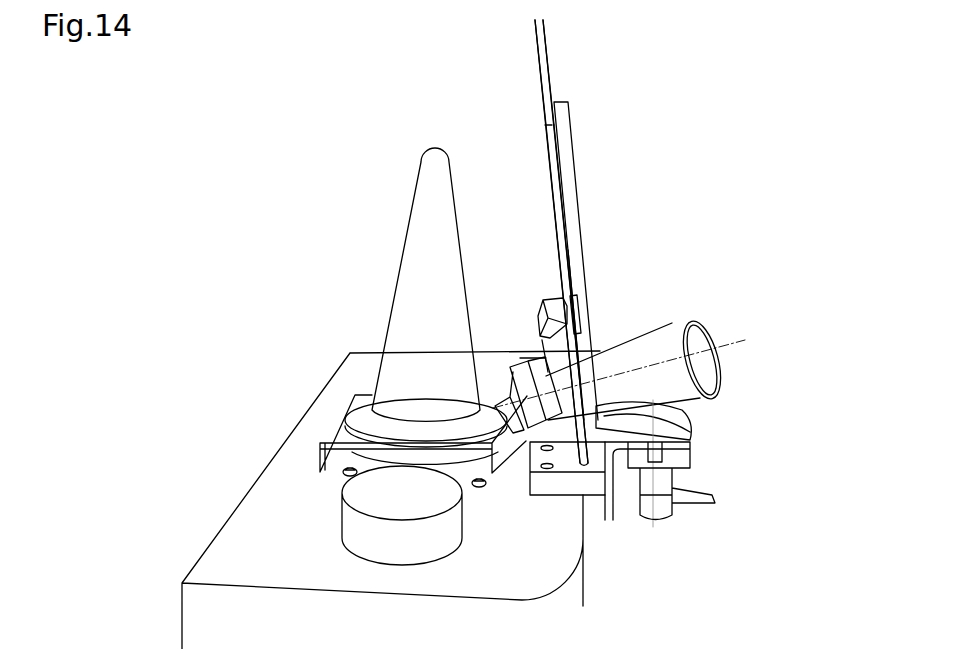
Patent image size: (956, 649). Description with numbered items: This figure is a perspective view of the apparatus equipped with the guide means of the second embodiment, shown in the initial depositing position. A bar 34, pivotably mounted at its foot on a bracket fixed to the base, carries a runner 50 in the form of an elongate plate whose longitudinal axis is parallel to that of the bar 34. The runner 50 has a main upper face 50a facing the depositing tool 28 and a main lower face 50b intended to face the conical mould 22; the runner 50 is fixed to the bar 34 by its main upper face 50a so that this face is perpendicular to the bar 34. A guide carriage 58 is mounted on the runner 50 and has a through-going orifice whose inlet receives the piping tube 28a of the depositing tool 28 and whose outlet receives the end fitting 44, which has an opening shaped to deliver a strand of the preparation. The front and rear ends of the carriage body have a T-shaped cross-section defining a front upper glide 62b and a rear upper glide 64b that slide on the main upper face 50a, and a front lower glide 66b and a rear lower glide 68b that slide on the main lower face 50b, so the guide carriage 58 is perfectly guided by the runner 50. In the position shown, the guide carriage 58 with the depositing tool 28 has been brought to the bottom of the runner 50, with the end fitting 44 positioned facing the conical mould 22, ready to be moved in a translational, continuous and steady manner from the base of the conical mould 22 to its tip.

The conical mould 22 is at (418, 255).
The end fitting 44 is at (508, 375).
The depositing tool 28 is at (689, 344).
The piping tube 28a is at (676, 324).
The front upper glide 62b is at (690, 432).
The front lower glide 66b is at (578, 415).
The runner 50 is at (533, 59).
The main upper face 50a is at (549, 42).
The main lower face 50b is at (546, 107).
The bar 34 is at (574, 141).
The guide carriage 58 is at (544, 272).
The rear upper glide 64b is at (566, 322).
The rear lower glide 68b is at (546, 304).